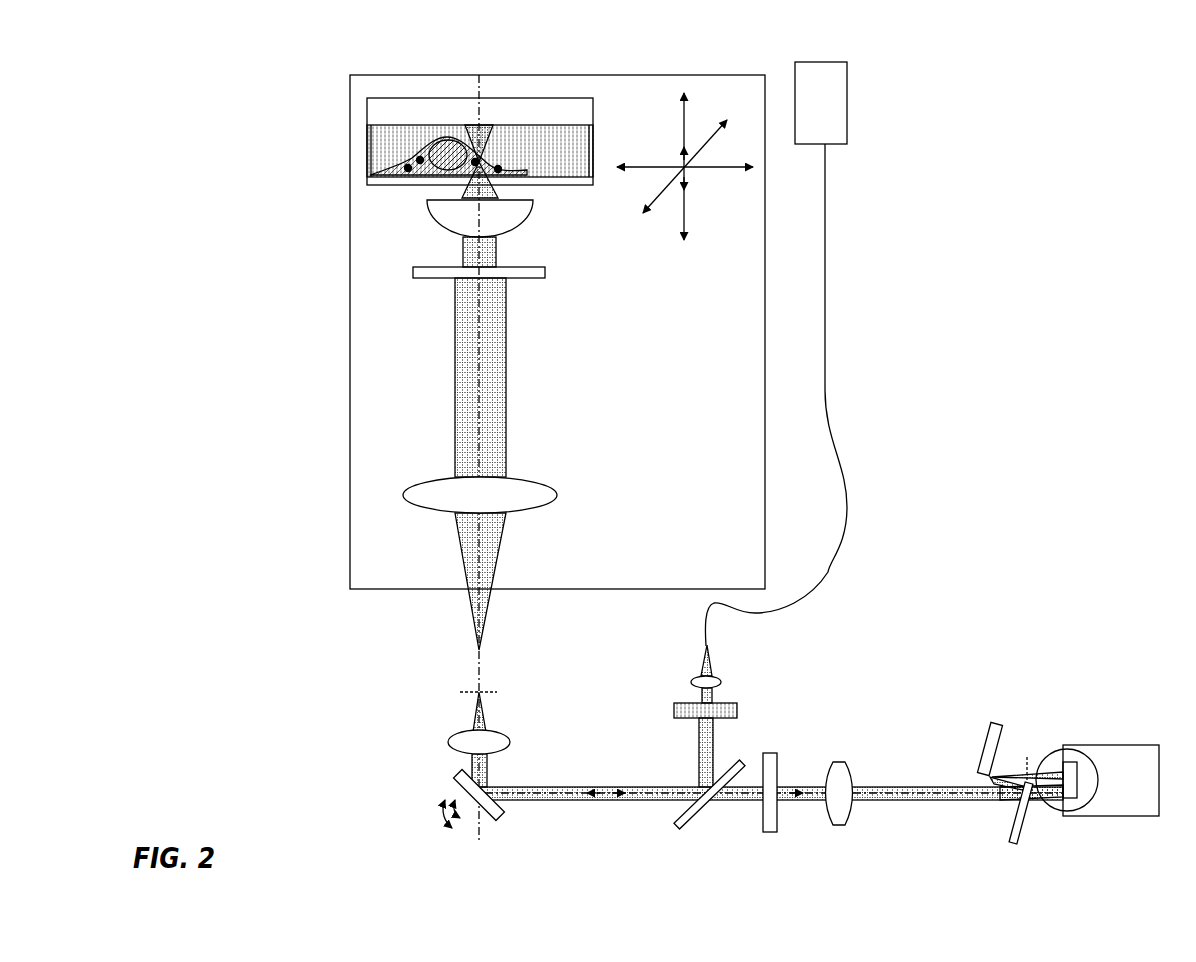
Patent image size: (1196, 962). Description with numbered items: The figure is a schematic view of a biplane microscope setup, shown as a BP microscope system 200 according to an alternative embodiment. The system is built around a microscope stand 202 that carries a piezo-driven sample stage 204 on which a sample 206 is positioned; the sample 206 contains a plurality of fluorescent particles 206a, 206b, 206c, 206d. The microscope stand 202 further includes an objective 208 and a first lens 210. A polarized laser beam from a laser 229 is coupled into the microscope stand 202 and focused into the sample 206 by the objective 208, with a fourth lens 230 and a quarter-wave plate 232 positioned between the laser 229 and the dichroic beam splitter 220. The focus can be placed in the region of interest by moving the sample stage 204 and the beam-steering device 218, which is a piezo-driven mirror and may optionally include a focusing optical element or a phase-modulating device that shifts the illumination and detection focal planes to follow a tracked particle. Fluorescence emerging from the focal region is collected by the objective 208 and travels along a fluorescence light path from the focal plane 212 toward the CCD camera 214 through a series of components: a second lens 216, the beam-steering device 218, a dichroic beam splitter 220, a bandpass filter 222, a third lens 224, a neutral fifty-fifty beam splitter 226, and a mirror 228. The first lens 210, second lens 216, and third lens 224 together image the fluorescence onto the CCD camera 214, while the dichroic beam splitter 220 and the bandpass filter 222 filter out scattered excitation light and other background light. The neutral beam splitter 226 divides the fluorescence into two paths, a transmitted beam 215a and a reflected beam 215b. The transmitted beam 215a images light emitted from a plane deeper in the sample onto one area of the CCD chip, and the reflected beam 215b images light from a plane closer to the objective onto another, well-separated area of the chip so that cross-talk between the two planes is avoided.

The BP microscope system 200 is at (1090, 285).
The microscope stand 202 is at (686, 75).
The piezo-driven sample stage 204 is at (438, 98).
The sample 206 is at (410, 140).
The fluorescent particle 206a is at (498, 168).
The fluorescent particle 206b is at (477, 161).
The fluorescent particle 206c is at (419, 160).
The fluorescent particle 206d is at (407, 168).
The objective 208 is at (430, 213).
The first lens 210 is at (405, 497).
The focal plane 212 is at (468, 692).
The CCD camera 214 is at (1115, 745).
The transmitted beam 215a is at (1040, 797).
The reflected beam 215b is at (1040, 772).
The second lens 216 is at (450, 742).
The beam-steering device 218 is at (493, 822).
The dichroic beam splitter 220 is at (675, 830).
The bandpass filter 222 is at (770, 832).
The third lens 224 is at (838, 825).
The neutral 50:50 beam splitter 226 is at (1012, 845).
The mirror 228 is at (993, 722).
The laser 229 is at (835, 62).
The fourth lens 230 is at (720, 682).
The λ/4 plate 232 is at (739, 710).